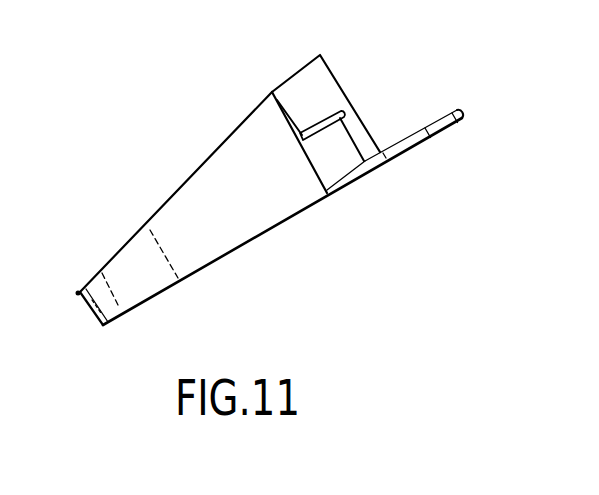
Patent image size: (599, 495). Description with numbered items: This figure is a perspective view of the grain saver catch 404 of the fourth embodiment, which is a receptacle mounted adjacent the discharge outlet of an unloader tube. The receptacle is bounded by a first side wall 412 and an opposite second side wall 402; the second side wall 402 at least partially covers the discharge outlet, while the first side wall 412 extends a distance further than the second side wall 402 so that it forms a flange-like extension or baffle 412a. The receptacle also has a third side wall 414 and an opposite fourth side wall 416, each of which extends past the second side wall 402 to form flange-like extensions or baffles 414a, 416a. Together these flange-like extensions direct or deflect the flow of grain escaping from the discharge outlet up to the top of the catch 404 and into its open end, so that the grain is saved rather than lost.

The second side wall 402 is at (320, 122).
The catch 404 is at (452, 62).
The first side wall 412 is at (283, 222).
The flange-like extension or baffle 412a is at (462, 112).
The third side wall 414 is at (227, 137).
The flange-like extension or baffle 414a is at (148, 221).
The fourth side wall 416 is at (347, 92).
The flange-like extension or baffle 416a is at (281, 90).